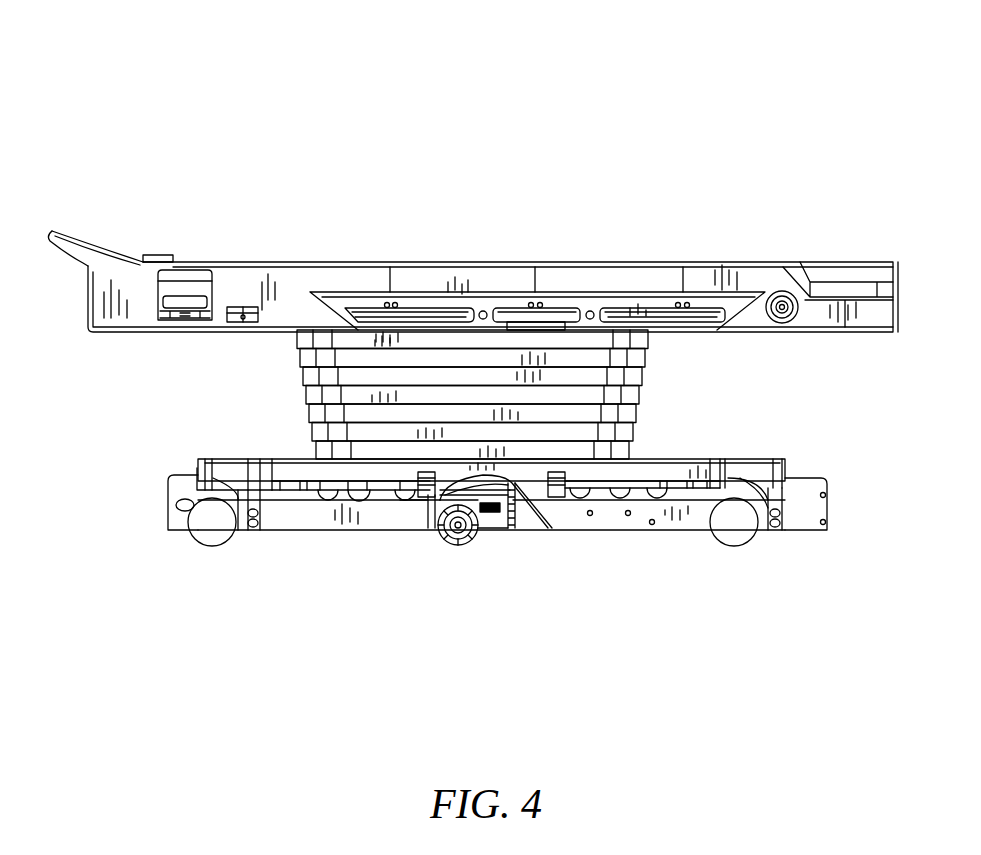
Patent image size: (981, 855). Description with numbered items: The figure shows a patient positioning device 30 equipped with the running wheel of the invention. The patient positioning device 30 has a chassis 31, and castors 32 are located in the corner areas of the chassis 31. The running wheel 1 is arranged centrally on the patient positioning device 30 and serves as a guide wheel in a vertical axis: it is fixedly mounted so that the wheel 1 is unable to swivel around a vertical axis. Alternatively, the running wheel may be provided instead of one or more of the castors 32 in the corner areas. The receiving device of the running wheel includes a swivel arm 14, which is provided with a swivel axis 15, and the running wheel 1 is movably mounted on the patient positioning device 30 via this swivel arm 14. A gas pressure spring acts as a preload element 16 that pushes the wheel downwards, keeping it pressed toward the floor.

The patient positioning device 30 is at (473, 356).
The chassis 31 is at (303, 473).
The castors 32 is at (205, 533).
The wheel 1 is at (528, 587).
The swivel arm 14 is at (515, 530).
The swivel axis 15 is at (547, 527).
The preload element 16 is at (487, 530).